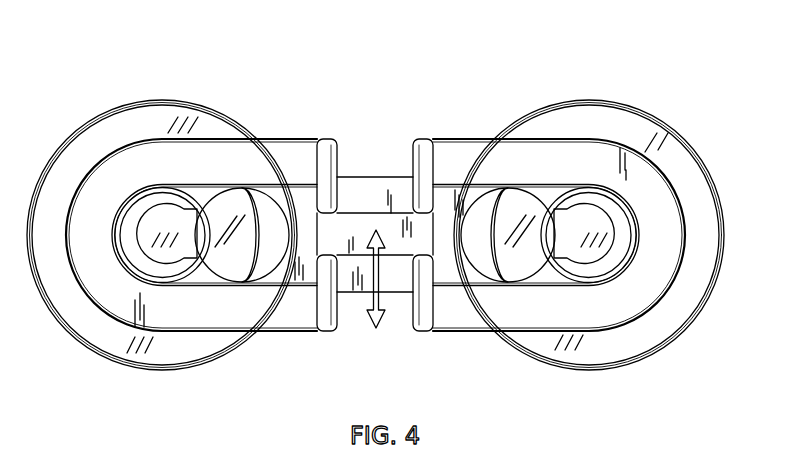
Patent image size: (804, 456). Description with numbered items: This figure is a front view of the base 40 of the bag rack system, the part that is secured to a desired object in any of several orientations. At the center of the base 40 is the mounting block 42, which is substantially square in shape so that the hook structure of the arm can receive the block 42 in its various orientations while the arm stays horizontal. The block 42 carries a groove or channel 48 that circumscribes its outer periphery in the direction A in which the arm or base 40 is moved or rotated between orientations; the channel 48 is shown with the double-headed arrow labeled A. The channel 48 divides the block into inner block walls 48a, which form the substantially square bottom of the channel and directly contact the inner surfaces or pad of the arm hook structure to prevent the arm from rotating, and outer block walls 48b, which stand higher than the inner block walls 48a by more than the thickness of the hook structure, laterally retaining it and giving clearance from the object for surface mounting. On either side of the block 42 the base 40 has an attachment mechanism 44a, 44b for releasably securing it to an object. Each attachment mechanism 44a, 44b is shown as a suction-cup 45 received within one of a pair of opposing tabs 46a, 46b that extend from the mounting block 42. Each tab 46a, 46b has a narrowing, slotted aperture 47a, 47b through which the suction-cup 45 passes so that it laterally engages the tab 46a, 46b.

The base 40 is at (377, 238).
The mounting block 42 is at (313, 352).
The attachment mechanism 44a is at (622, 382).
The attachment mechanism 44b is at (138, 380).
The suction-cup 45 is at (155, 122).
The tab 46a is at (664, 267).
The tab 46b is at (98, 282).
The slotted aperture 47a is at (484, 262).
The slotted aperture 47b is at (224, 276).
The channel 48 is at (387, 230).
The inner block walls 48a is at (393, 263).
The outer block walls 48b is at (332, 168).
The direction A is at (362, 303).